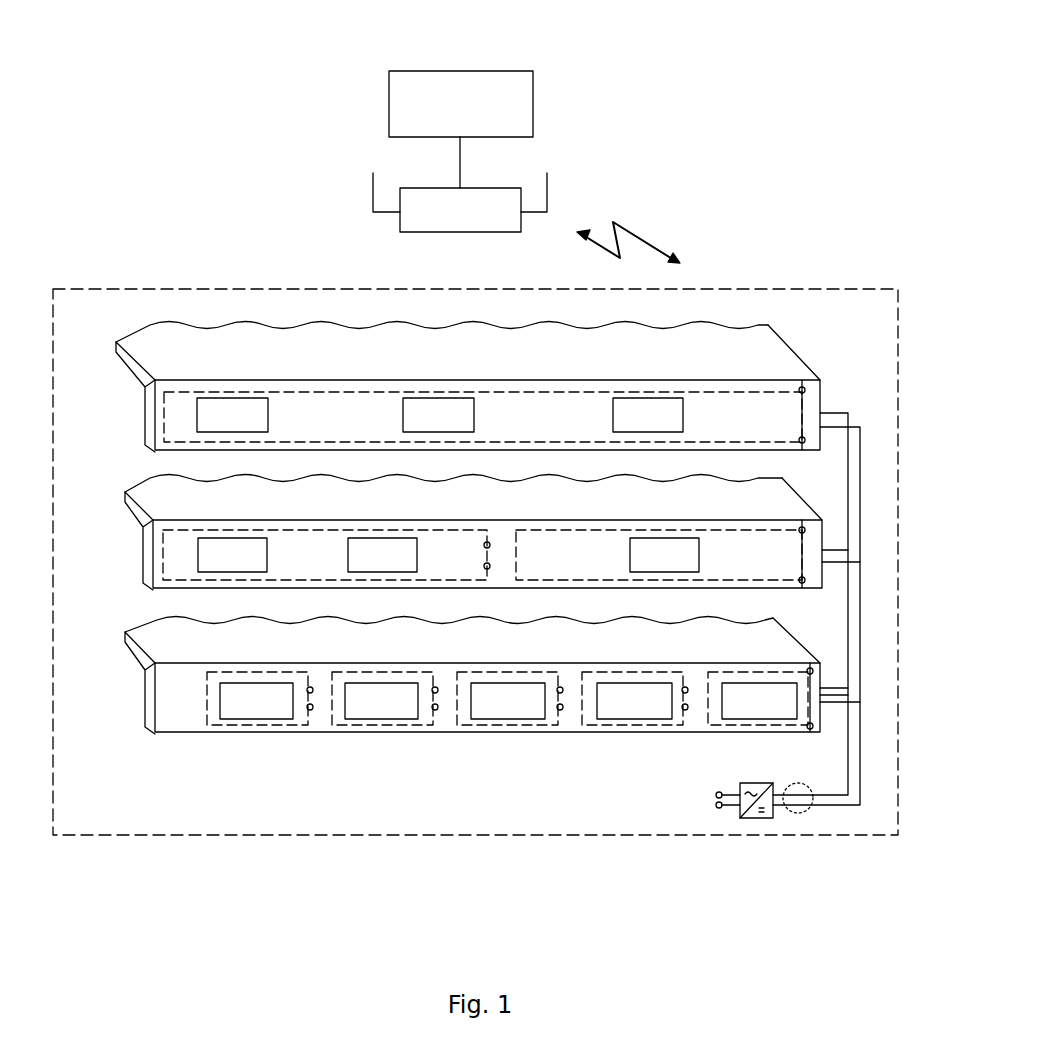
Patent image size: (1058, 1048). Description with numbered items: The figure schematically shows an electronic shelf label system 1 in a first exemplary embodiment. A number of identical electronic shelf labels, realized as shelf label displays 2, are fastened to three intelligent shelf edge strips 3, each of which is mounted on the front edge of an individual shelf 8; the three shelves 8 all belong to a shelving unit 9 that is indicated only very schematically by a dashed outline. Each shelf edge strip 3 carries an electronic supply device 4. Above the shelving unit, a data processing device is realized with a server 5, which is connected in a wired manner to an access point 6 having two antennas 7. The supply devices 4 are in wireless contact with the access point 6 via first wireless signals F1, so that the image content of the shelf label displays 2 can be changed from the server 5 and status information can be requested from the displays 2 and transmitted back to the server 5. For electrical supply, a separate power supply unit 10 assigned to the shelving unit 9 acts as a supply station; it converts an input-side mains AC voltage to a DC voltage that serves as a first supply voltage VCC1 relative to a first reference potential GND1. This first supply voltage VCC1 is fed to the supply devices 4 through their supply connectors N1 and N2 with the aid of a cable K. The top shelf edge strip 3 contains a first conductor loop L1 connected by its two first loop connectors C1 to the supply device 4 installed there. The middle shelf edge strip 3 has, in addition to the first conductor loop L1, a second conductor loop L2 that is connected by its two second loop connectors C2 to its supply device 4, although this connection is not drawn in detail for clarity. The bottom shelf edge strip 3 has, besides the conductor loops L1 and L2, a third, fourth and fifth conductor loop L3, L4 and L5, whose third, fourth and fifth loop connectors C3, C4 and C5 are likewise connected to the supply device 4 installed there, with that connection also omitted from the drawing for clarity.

The shelf label system 1 is at (708, 83).
The shelf label display 2 is at (250, 415).
The shelf edge strip 3 is at (150, 413).
The supply device 4 is at (807, 418).
The server 5 is at (521, 102).
The access point 6 is at (400, 220).
The antenna 7 is at (373, 188).
The shelf 8 is at (137, 366).
The shelving unit 9 is at (232, 835).
The power supply unit 10 is at (757, 818).
The cable K is at (798, 813).
The first wireless signals F1 is at (640, 233).
The first loop connectors C1 is at (803, 388).
The second loop connectors C2 is at (488, 565).
The third loop connectors C3 is at (561, 689).
The fourth loop connectors C4 is at (436, 689).
The fifth loop connectors C5 is at (311, 689).
The first conductor loop L1 is at (558, 440).
The second conductor loop L2 is at (405, 582).
The third conductor loop L3 is at (510, 732).
The fourth conductor loop L4 is at (377, 732).
The fifth conductor loop L5 is at (253, 732).
The supply connector N1 is at (830, 413).
The supply connector N2 is at (855, 427).
The first reference potential GND1 is at (815, 806).
The first supply voltage VCC1 is at (832, 806).